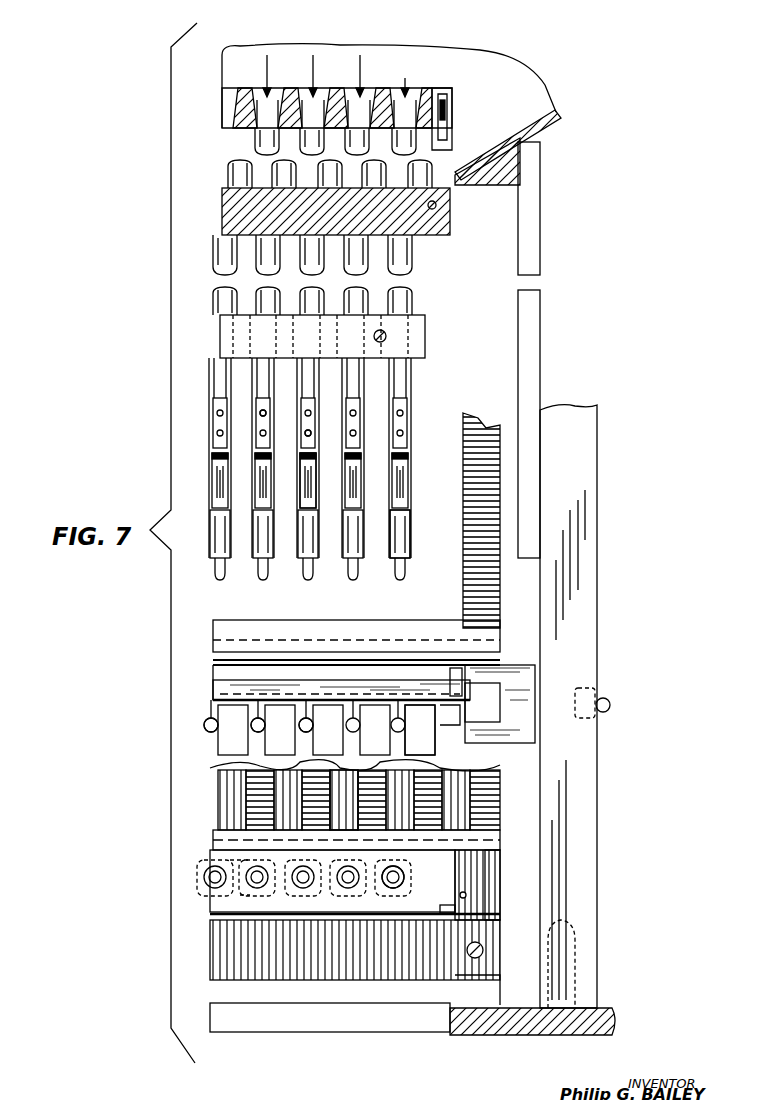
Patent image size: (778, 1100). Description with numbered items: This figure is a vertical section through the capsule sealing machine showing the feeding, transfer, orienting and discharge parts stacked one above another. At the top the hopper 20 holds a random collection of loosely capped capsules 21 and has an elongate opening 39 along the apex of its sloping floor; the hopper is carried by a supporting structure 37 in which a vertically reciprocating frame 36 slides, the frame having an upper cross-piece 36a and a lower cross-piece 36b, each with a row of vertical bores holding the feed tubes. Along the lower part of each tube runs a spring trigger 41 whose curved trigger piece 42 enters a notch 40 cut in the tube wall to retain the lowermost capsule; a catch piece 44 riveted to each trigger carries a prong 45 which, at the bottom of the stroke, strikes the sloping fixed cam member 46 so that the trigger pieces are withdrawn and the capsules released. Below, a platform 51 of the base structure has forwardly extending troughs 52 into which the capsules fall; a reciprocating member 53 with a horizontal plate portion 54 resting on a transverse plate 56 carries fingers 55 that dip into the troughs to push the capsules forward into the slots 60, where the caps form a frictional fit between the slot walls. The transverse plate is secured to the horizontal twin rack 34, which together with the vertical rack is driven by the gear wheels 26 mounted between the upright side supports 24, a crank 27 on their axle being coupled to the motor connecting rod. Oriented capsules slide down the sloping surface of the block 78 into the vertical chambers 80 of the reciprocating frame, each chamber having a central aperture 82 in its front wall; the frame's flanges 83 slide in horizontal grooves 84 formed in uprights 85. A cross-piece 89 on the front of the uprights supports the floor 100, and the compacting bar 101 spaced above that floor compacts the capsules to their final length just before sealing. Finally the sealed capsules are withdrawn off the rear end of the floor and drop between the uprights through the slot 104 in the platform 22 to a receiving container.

The hopper 20 is at (560, 128).
The platform 22 is at (600, 1010).
The upright side supports 24 is at (584, 556).
The gear wheels 26 is at (470, 428).
The horizontal twin rack 34 is at (490, 708).
The vertically reciprocating frame 36 is at (364, 103).
The upper cross-piece 36a is at (454, 112).
The lower cross-piece 36b is at (446, 226).
The supporting structure 37 is at (542, 337).
The elongate opening 39 is at (236, 178).
The spring trigger 41 is at (355, 380).
The trigger piece 42 is at (312, 495).
The catch piece 44 is at (308, 440).
The prong 45 is at (310, 482).
The notches 40 is at (320, 522).
The fixed cam member 46 is at (228, 640).
The reciprocating member 53 is at (345, 680).
The horizontal plate portion 54 is at (216, 690).
The fingers 55 is at (350, 722).
The troughs 52 is at (299, 730).
The platform 51 is at (216, 742).
The transverse plate 56 is at (443, 682).
The capsules 21 is at (408, 740).
The slots 60 is at (212, 763).
The block 78 is at (218, 804).
The crank 27 is at (360, 805).
The compacting bar 101 is at (226, 838).
The vertical chambers 80 is at (225, 892).
The aperture 82 is at (393, 877).
The horizontal grooves 84 is at (465, 895).
The uprights 85 is at (492, 900).
The flanges 83 is at (450, 908).
The floor 100 is at (225, 914).
The cross-piece 89 is at (216, 966).
The slot 104 is at (312, 1022).